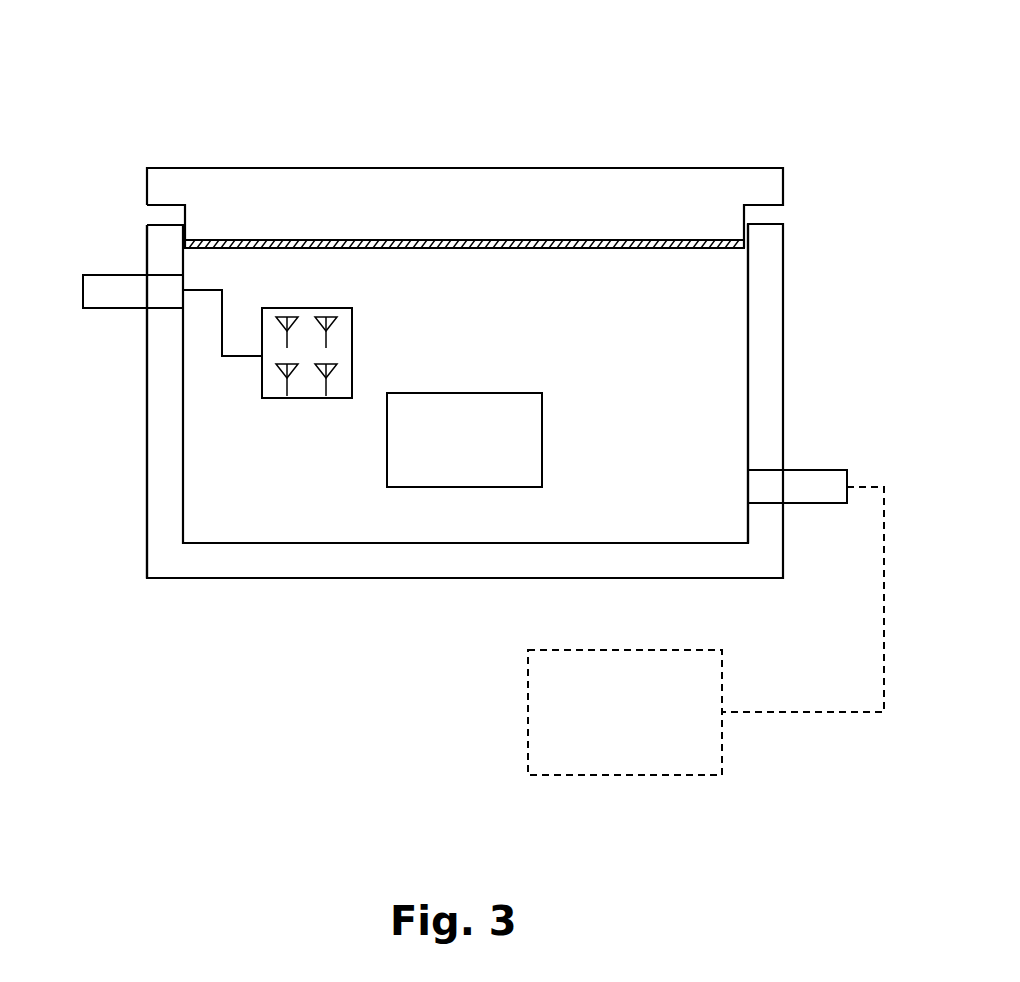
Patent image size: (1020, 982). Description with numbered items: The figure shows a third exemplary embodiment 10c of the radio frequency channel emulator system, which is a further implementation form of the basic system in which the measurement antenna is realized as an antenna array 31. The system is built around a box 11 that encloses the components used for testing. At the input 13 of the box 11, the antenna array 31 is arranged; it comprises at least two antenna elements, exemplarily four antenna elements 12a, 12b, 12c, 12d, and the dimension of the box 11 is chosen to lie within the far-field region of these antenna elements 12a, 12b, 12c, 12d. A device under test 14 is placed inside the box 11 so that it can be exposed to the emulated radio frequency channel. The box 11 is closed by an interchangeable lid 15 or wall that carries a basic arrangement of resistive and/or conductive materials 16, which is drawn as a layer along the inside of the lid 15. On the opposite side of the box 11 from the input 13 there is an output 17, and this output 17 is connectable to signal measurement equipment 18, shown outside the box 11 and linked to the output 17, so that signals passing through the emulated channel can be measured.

The third exemplary embodiment 10c is at (204, 65).
The box 11 is at (783, 383).
The antenna element 12a is at (286, 320).
The antenna element 12b is at (325, 320).
The antenna element 12c is at (283, 369).
The antenna element 12d is at (328, 369).
The input 13 is at (83, 292).
The device under test 14 is at (542, 440).
The interchangeable lid 15 is at (465, 168).
The resistive and/or conductive materials 16 is at (555, 240).
The output 17 is at (822, 470).
The signal measurement equipment 18 is at (528, 711).
The antenna array 31 is at (352, 323).